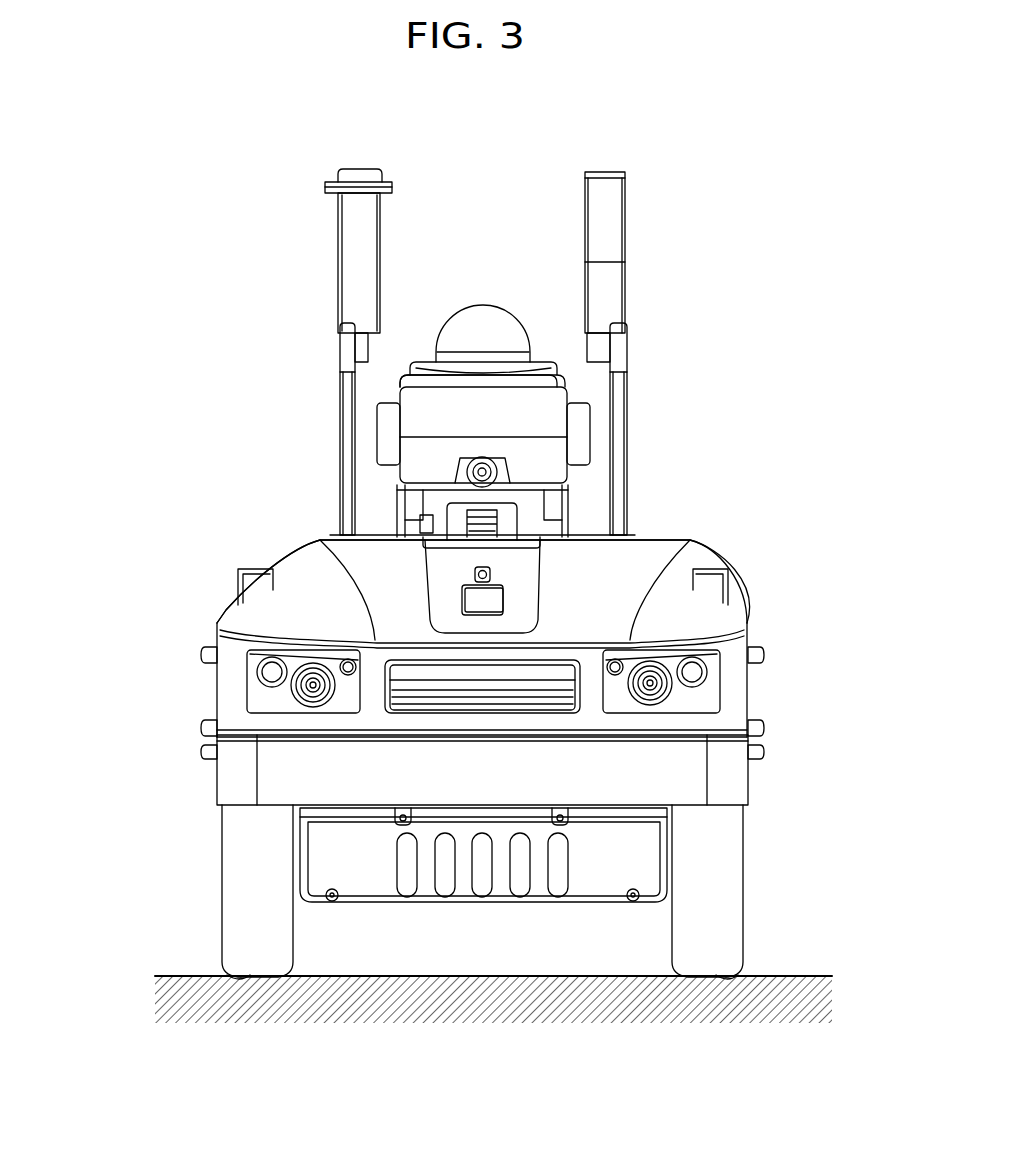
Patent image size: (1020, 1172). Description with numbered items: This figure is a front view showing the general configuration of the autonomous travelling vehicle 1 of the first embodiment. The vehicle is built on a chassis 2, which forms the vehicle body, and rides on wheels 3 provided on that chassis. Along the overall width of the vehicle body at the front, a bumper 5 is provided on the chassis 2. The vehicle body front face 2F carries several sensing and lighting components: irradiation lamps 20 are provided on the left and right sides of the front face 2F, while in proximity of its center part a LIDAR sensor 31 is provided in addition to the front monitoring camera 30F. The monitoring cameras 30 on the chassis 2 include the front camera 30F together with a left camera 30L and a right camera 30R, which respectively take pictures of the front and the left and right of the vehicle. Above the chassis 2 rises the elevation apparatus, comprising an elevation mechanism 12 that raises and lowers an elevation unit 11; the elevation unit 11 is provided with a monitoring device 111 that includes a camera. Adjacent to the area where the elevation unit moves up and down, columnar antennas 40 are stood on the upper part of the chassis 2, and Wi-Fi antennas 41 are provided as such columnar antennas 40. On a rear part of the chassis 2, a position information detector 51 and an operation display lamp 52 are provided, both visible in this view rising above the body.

The autonomous travelling vehicle 1 is at (690, 157).
The chassis 2 is at (322, 534).
The vehicle body front face 2F is at (386, 587).
The wheels 3 is at (245, 875).
The bumper 5 is at (718, 762).
The elevation unit 11 is at (526, 400).
The elevation mechanism 12 is at (425, 353).
The irradiation lamps 20 is at (245, 677).
The monitoring cameras 30 is at (473, 540).
The front monitoring camera 30F is at (540, 567).
The right monitoring camera 30R is at (243, 580).
The left monitoring camera 30L is at (724, 580).
The LIDAR sensor 31 is at (492, 597).
The columnar antennas 40 is at (620, 438).
The Wi-Fi antennas 41 is at (337, 408).
The position information detector 51 is at (327, 187).
The operation display lamp 52 is at (615, 233).
The monitoring device 111 is at (492, 312).